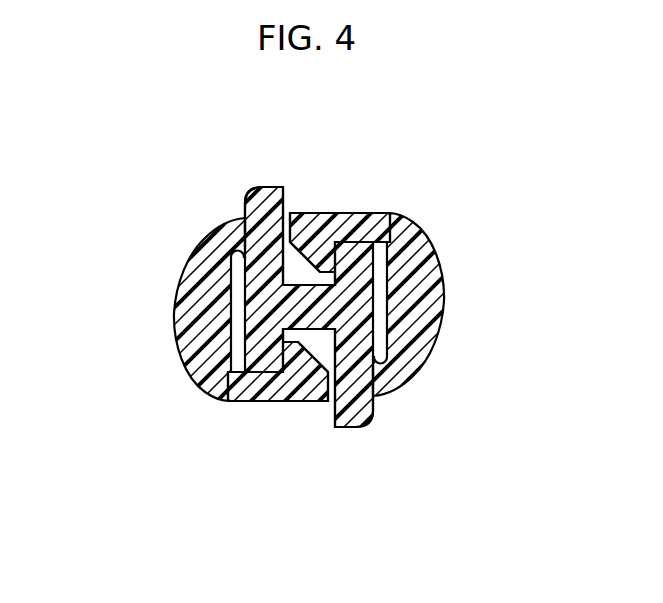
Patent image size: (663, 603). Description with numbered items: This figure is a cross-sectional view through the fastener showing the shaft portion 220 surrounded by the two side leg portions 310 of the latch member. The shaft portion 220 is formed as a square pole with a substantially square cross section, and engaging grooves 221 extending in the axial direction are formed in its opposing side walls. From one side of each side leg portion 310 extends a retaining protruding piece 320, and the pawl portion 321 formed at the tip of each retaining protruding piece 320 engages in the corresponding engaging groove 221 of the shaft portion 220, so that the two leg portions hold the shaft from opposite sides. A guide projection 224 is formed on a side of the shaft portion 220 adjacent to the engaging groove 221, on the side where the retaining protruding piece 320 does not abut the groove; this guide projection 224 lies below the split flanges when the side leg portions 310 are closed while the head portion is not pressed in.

The shaft portion 220 is at (386, 313).
The engaging groove 221 is at (298, 285).
The guide projection 224 is at (257, 187).
The side leg portion 310 is at (177, 321).
The retaining protruding piece 320 is at (364, 212).
The pawl portion 321 is at (326, 260).